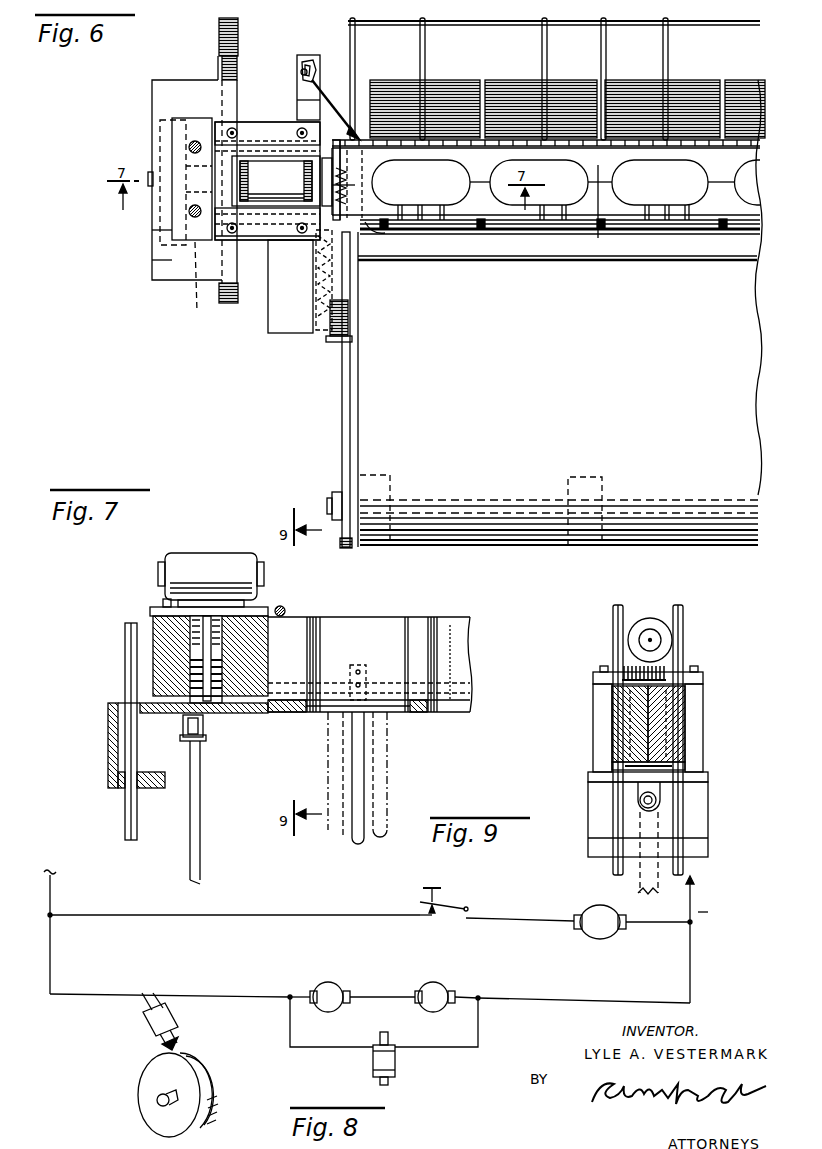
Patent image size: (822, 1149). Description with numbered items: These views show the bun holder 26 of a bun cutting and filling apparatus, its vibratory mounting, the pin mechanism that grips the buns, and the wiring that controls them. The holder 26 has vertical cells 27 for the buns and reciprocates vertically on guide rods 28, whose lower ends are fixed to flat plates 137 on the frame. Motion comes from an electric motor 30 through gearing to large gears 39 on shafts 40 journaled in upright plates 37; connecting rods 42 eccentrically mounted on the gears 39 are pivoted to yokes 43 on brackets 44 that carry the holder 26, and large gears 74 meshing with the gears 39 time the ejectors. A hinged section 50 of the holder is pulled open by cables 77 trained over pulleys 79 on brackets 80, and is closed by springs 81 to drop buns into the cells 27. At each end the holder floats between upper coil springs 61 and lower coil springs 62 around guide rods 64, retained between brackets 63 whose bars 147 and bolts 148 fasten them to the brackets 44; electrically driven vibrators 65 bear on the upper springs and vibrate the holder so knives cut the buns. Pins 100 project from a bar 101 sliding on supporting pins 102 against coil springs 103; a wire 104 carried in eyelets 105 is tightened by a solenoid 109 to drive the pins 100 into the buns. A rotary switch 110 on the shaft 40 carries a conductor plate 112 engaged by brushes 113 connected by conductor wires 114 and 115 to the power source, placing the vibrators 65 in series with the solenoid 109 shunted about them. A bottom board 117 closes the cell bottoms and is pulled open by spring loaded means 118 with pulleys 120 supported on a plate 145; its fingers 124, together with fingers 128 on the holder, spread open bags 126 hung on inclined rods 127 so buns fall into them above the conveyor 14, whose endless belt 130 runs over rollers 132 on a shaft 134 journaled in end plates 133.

In FIG. 6, the conveyor 14 is at (500, 550).
In FIG. 6, the holder 26 is at (482, 208).
In FIG. 7, the holder 26 is at (160, 671).
In FIG. 9, the holder 26 is at (630, 736).
In FIG. 6, the cells 27 is at (657, 165).
In FIG. 7, the cells 27 is at (384, 630).
In FIG. 6, the guide rods 28 is at (190, 152).
In FIG. 7, the guide rods 28 is at (125, 810).
In FIG. 9, the guide rods 28 is at (683, 823).
In FIG. 8, the electric motor 30 is at (602, 940).
In FIG. 6, the upright plates 37 is at (197, 287).
In FIG. 6, the large gears 39 is at (219, 70).
In FIG. 6, the shafts 40 is at (148, 177).
In FIG. 8, the shafts 40 is at (157, 1103).
In FIG. 7, the connecting rods 42 is at (200, 818).
In FIG. 9, the connecting rods 42 is at (648, 826).
In FIG. 7, the yokes 43 is at (203, 740).
In FIG. 9, the yokes 43 is at (700, 782).
In FIG. 6, the brackets 44 is at (175, 232).
In FIG. 7, the brackets 44 is at (108, 762).
In FIG. 6, the hinged section 50 is at (473, 160).
In FIG. 7, the hinged section 50 is at (425, 626).
In FIG. 9, the hinged section 50 is at (683, 716).
In FIG. 7, the upper coil springs 61 is at (284, 608).
In FIG. 7, the lower coil springs 62 is at (221, 698).
In FIG. 9, the lower coil springs 62 is at (680, 767).
In FIG. 7, the brackets 63 is at (152, 644).
In FIG. 9, the brackets 63 is at (703, 691).
In FIG. 7, the guide rods 64 is at (222, 652).
In FIG. 6, the electrically driven vibrators 65 is at (272, 184).
In FIG. 7, the electrically driven vibrators 65 is at (206, 556).
In FIG. 9, the electrically driven vibrators 65 is at (663, 642).
In FIG. 8, the electrically driven vibrators 65 is at (320, 984).
In FIG. 6, the large gears 74 is at (242, 25).
In FIG. 6, the cables 77 is at (297, 101).
In FIG. 6, the pulleys 79 is at (305, 62).
In FIG. 6, the brackets 80 is at (299, 98).
In FIG. 6, the springs 81 is at (345, 194).
In FIG. 7, the springs 81 is at (287, 612).
In FIG. 9, the springs 81 is at (662, 676).
In FIG. 6, the pins 100 is at (668, 232).
In FIG. 6, the bar 101 is at (653, 228).
In FIG. 6, the supporting pins 102 is at (384, 232).
In FIG. 6, the coil springs 103 is at (372, 238).
In FIG. 6, the wire 104 is at (577, 200).
In FIG. 6, the eyelets 105 is at (375, 342).
In FIG. 8, the solenoid 109 is at (385, 1062).
In FIG. 6, the rotary switch 110 is at (159, 133).
In FIG. 8, the rotary switch 110 is at (145, 1080).
In FIG. 8, the conductor plate 112 is at (200, 1068).
In FIG. 8, the brushes 113 is at (175, 1040).
In FIG. 8, the conductor wire 114 is at (50, 953).
In FIG. 8, the conductor wire 115 is at (690, 966).
In FIG. 7, the bottom board 117 is at (415, 710).
In FIG. 6, the spring loaded means 118 is at (313, 306).
In FIG. 6, the pulleys 120 is at (330, 335).
In FIG. 7, the fingers 124 is at (338, 790).
In FIG. 6, the bags 126 is at (389, 80).
In FIG. 6, the inclined rods 127 is at (540, 44).
In FIG. 7, the finger 128 is at (357, 750).
In FIG. 6, the endless belt 130 is at (628, 482).
In FIG. 6, the outer rollers 132 is at (391, 482).
In FIG. 6, the end plates 133 is at (342, 401).
In FIG. 6, the shaft 134 is at (447, 500).
In FIG. 6, the flat plates 137 is at (173, 274).
In FIG. 6, the plate 145 is at (272, 322).
In FIG. 6, the bars 147 is at (261, 238).
In FIG. 9, the bars 147 is at (600, 682).
In FIG. 7, the bolts 148 is at (166, 603).
In FIG. 9, the bolts 148 is at (604, 666).